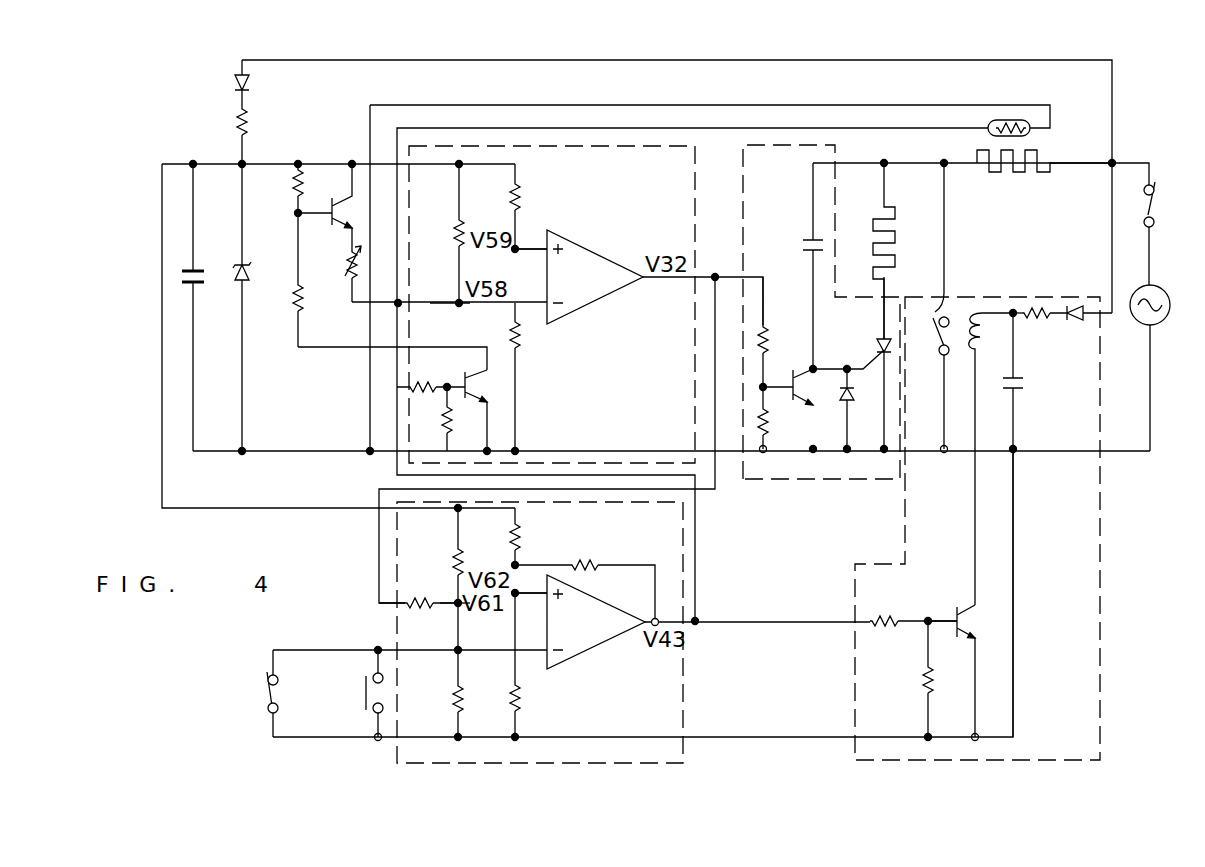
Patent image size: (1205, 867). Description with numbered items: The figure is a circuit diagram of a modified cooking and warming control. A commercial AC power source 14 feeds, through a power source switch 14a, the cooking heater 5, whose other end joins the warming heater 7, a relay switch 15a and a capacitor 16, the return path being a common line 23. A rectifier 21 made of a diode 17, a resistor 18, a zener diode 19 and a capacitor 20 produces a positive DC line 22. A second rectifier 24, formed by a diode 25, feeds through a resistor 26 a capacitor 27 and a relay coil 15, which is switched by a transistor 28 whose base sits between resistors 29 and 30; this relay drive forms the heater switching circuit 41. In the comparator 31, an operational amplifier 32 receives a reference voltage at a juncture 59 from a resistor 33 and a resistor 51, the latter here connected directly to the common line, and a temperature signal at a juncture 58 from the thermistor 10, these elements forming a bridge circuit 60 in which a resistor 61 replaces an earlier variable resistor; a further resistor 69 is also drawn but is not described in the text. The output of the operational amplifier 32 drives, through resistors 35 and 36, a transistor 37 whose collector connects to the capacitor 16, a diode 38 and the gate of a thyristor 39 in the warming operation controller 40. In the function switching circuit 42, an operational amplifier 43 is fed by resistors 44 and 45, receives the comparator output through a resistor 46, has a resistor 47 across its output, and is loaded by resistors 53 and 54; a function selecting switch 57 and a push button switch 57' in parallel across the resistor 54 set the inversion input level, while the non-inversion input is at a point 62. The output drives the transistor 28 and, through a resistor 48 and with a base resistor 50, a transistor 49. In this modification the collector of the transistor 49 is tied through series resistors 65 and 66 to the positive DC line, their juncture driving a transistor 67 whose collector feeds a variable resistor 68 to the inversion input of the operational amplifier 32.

The cooking heater 5 is at (1010, 178).
The warming heater 7 is at (895, 236).
The thermistor 10 is at (990, 135).
The commercial AC power source 14 is at (1172, 306).
The power source switch 14a is at (1157, 199).
The relay coil 15 is at (977, 329).
The relay switch 15a is at (935, 306).
The capacitor 16 is at (800, 253).
The diode 17 is at (250, 84).
The resistor 18 is at (250, 126).
The zener diode 19 is at (250, 271).
The capacitor 20 is at (206, 276).
The rectifier 21 is at (254, 199).
The positive DC line 22 is at (300, 163).
The common line 23 is at (1040, 454).
The rectifier 24 is at (1024, 322).
The diode 25 is at (1074, 304).
The resistor 26 is at (1035, 306).
The capacitor 27 is at (1025, 385).
The transistor 28 is at (982, 605).
The resistor 29 is at (885, 619).
The resistor 30 is at (920, 685).
The comparator 31 is at (697, 233).
The operational amplifier 32 is at (597, 259).
The resistor 33 is at (518, 187).
The resistor 35 is at (768, 333).
The resistor 36 is at (768, 433).
The transistor 37 is at (806, 393).
The diode 38 is at (852, 399).
The thyristor 39 is at (872, 348).
The warming operation controller 40 is at (818, 480).
The heater switching circuit 41 is at (1100, 511).
The function switching circuit 42 is at (395, 626).
The operational amplifier 43 is at (603, 636).
The resistor 44 is at (519, 531).
The resistor 45 is at (455, 559).
The resistor 46 is at (417, 603).
The resistor 47 is at (586, 563).
The resistor 48 is at (427, 385).
The transistor 49 is at (481, 395).
The resistor 50 is at (441, 417).
The resistor 51 is at (519, 338).
The resistor 53 is at (520, 699).
The resistor 54 is at (450, 704).
The function selecting switch 57 is at (249, 693).
The push button switch 57' is at (352, 693).
The juncture 58 is at (456, 302).
The juncture 59 is at (516, 253).
The bridge circuit 60 is at (491, 319).
The resistor 61 is at (457, 607).
The point 62 is at (518, 597).
The resistor 65 is at (296, 327).
The resistor 66 is at (306, 183).
The transistor 67 is at (342, 242).
The variable resistor 68 is at (342, 271).
The resistor 69 is at (454, 238).